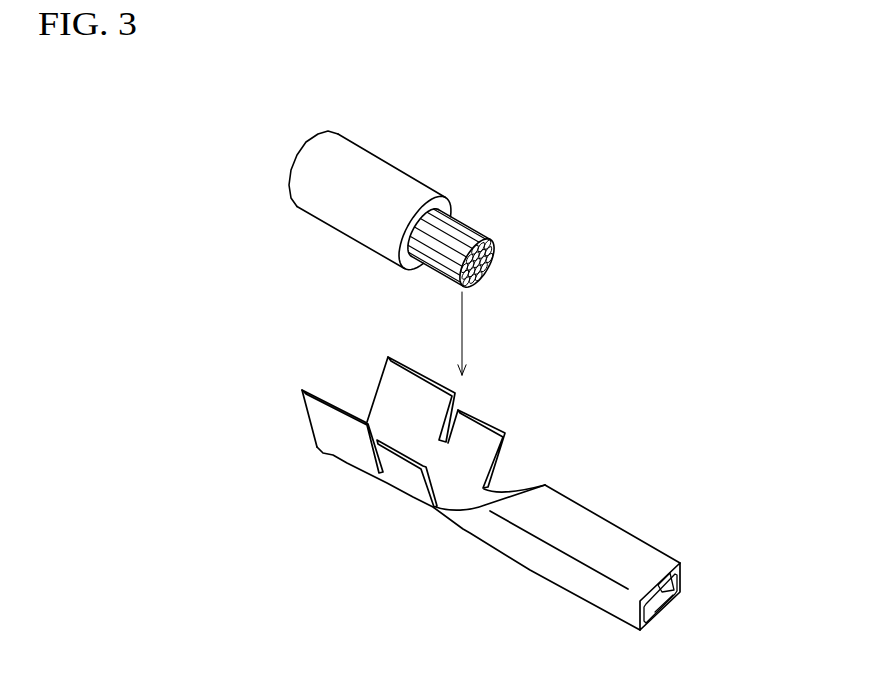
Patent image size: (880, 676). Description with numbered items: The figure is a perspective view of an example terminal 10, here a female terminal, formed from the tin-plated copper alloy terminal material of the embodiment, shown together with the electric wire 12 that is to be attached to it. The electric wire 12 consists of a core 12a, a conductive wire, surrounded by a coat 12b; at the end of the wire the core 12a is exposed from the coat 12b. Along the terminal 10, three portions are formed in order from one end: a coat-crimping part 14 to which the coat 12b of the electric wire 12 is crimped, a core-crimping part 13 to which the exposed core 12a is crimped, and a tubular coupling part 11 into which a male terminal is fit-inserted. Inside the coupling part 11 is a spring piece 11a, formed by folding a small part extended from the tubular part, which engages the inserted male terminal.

The terminal 10 is at (470, 550).
The coupling part 11 is at (623, 543).
The spring piece 11a is at (677, 574).
The electric wire 12 is at (386, 145).
The core 12a is at (497, 252).
The coat 12b is at (337, 198).
The core-crimping part 13 is at (485, 418).
The coat-crimping part 14 is at (328, 413).